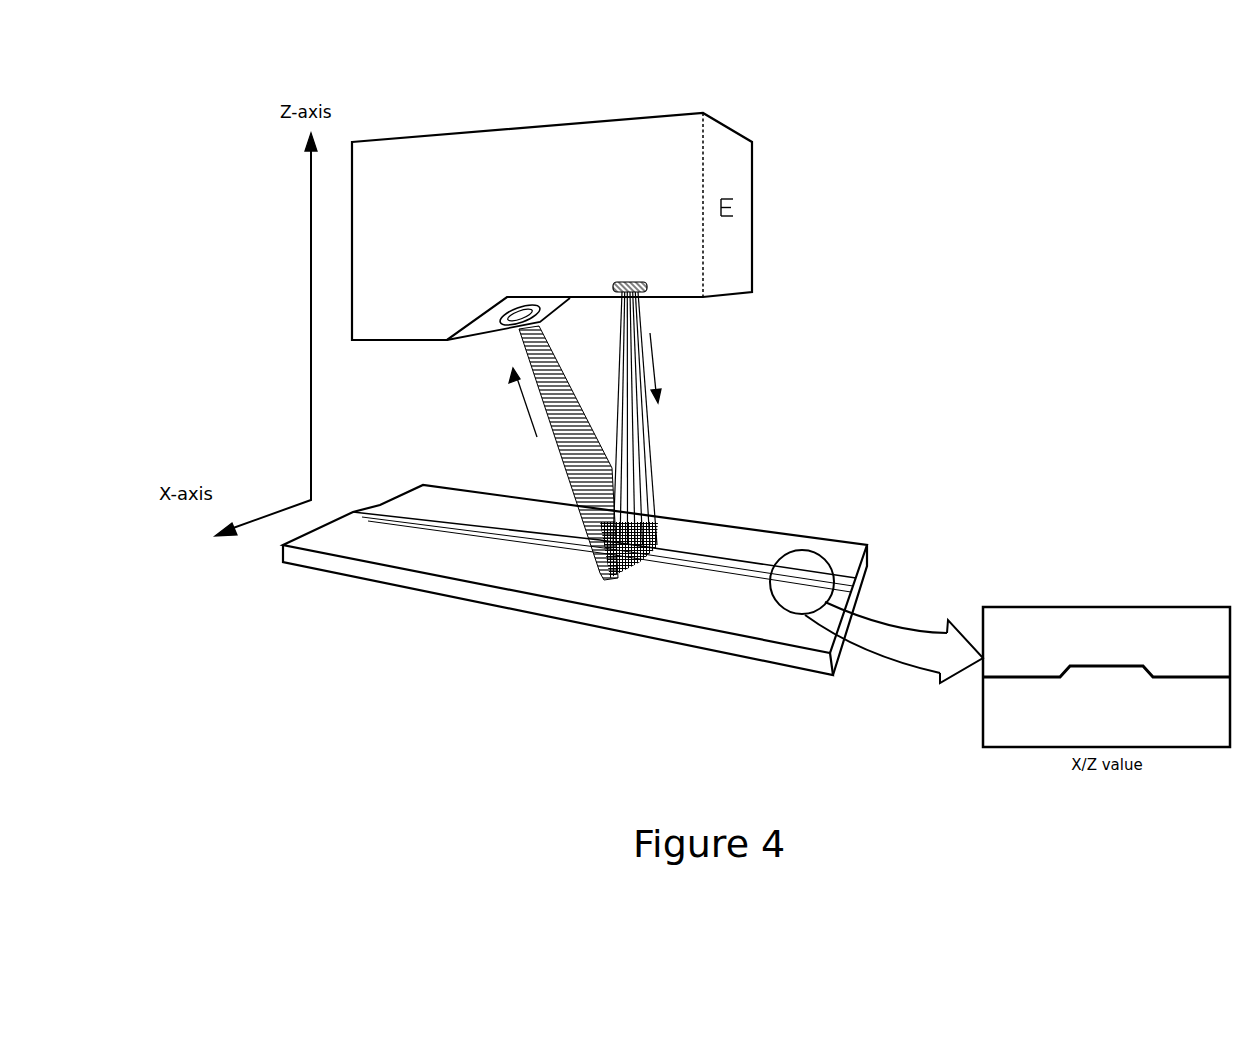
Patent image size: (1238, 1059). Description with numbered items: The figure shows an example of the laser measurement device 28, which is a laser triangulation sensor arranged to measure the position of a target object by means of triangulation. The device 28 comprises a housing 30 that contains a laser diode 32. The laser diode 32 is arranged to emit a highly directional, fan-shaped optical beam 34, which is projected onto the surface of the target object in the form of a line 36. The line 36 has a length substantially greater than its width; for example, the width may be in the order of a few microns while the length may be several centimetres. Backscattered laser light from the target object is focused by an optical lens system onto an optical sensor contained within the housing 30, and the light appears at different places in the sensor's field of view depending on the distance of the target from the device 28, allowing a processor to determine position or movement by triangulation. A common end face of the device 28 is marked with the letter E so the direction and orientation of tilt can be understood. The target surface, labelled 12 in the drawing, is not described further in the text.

The workpiece 12 is at (417, 580).
The laser measurement device 28 is at (840, 176).
The housing 30 is at (568, 152).
The laser diode 32 is at (640, 280).
The fan-shaped optical beam 34 is at (648, 432).
The line 36 is at (503, 320).